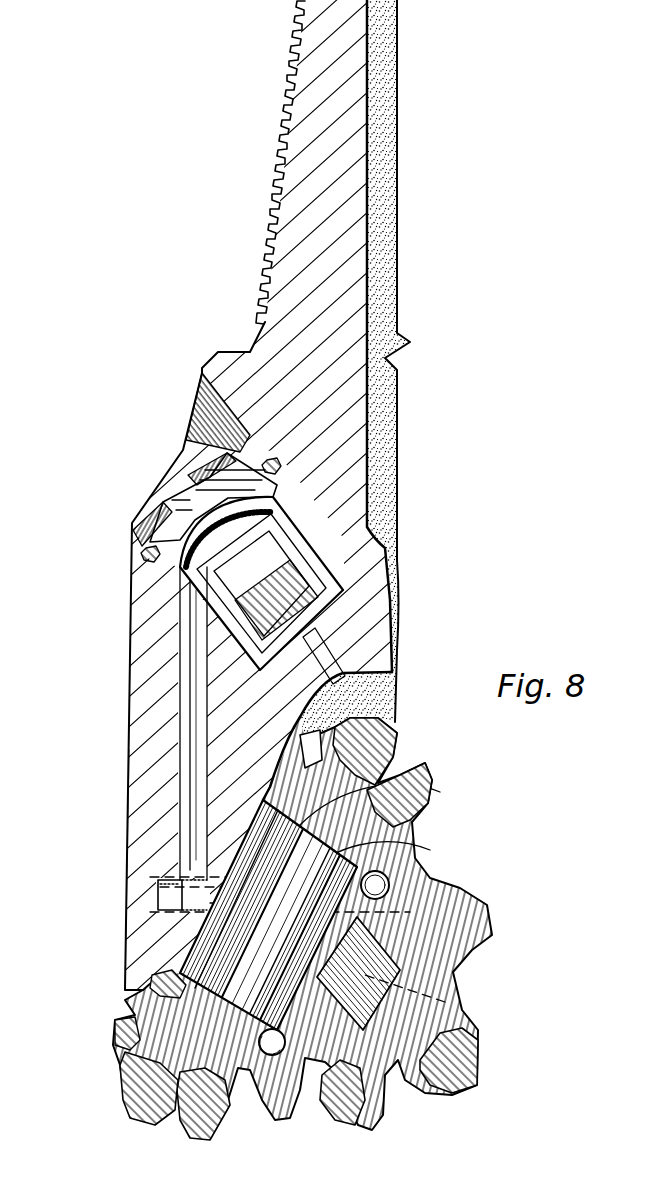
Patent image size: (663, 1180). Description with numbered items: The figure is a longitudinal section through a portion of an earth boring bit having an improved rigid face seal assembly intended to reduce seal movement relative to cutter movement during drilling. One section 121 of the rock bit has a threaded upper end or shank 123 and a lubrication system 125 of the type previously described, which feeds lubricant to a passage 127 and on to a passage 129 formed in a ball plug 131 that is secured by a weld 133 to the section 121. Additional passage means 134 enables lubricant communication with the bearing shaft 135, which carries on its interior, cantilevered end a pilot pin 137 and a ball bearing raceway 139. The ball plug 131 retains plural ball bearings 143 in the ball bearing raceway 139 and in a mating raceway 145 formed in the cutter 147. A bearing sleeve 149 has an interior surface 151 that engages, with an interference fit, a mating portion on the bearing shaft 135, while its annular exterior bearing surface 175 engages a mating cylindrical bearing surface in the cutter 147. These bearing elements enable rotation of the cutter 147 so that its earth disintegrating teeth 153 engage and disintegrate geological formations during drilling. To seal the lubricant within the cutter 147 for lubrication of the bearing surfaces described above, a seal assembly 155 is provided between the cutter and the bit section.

The section of a rock bit 121 is at (104, 612).
The threaded upper end or shank 123 is at (266, 222).
The lubrication system 125 is at (125, 431).
The passage 127 is at (190, 712).
The passage 129 is at (250, 875).
The ball plug 131 is at (160, 895).
The weld 133 is at (135, 906).
The additional passage means 134 is at (445, 1002).
The bearing shaft 135 is at (440, 792).
The pilot pin 137 is at (400, 1073).
The ball bearing raceway 139 is at (390, 903).
The ball bearings 143 is at (260, 1056).
The mating raceway 145 is at (273, 1057).
The cutter 147 is at (135, 1115).
The bearing sleeve 149 is at (223, 1027).
The interior surface 151 is at (430, 850).
The earth disintegrating teeth 153 is at (405, 1135).
The seal assembly 155 is at (155, 988).
The annular exterior bearing surface 175 is at (222, 1025).